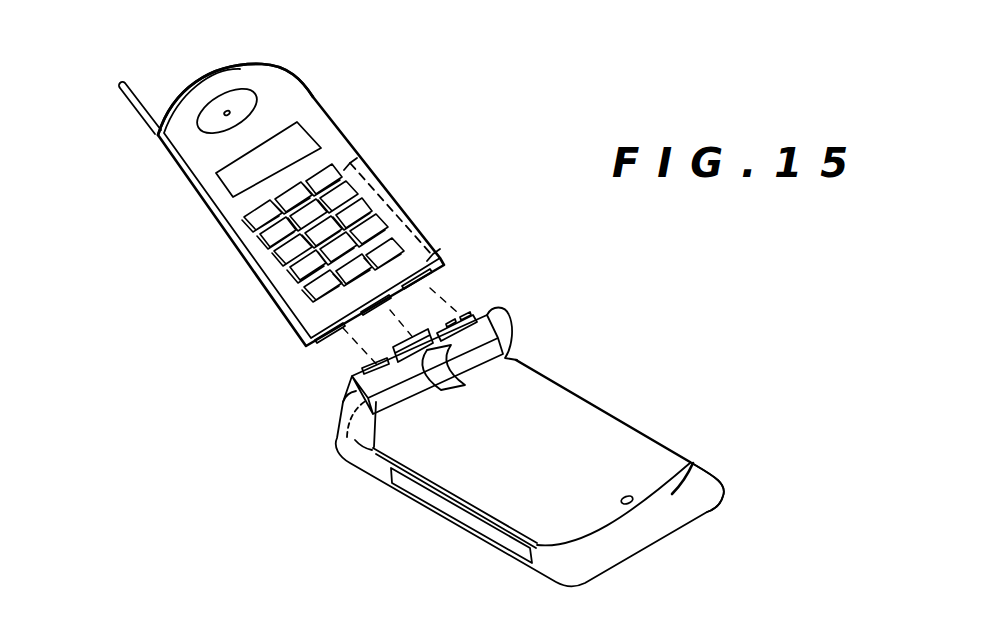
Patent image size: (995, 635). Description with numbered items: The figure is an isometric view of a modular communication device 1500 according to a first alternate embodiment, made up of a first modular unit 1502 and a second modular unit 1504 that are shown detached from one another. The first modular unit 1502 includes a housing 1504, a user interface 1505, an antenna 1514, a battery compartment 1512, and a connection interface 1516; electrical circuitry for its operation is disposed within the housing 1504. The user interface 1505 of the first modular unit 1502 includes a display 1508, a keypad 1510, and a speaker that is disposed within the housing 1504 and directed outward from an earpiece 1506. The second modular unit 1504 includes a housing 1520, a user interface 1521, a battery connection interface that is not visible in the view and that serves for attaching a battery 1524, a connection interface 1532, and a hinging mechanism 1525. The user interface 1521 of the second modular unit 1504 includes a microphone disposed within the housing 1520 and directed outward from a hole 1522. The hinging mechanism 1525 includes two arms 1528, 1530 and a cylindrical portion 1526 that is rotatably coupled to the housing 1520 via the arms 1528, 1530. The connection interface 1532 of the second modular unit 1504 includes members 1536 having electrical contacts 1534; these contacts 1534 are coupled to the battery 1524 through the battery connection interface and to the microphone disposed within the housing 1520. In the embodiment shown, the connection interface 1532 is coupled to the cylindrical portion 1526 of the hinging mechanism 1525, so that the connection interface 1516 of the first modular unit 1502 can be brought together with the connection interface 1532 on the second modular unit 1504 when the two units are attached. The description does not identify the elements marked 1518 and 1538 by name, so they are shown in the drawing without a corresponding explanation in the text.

The modular communication device 1500 is at (611, 60).
The first modular unit 1502 is at (301, 205).
The second modular unit 1504 is at (428, 283).
The user interface 1505 is at (425, 231).
The earpiece 1506 is at (227, 85).
The display 1508 is at (203, 169).
The keypad 1510 is at (270, 233).
The battery compartment 1512 is at (412, 206).
The antenna 1514 is at (97, 108).
The connection interface 1516 is at (318, 339).
The connector slot 1518 is at (301, 371).
The housing 1520 is at (551, 473).
The user interface 1521 is at (787, 468).
The hole 1522 is at (696, 528).
The battery 1524 is at (441, 515).
The hinging mechanism 1525 is at (481, 388).
The cylindrical portion 1526 is at (423, 375).
The arm 1528 is at (311, 446).
The arm 1530 is at (557, 332).
The connection interface 1532 is at (445, 278).
The electrical contacts 1534 is at (503, 282).
The members 1536 is at (532, 301).
The base rim 1538 is at (411, 456).